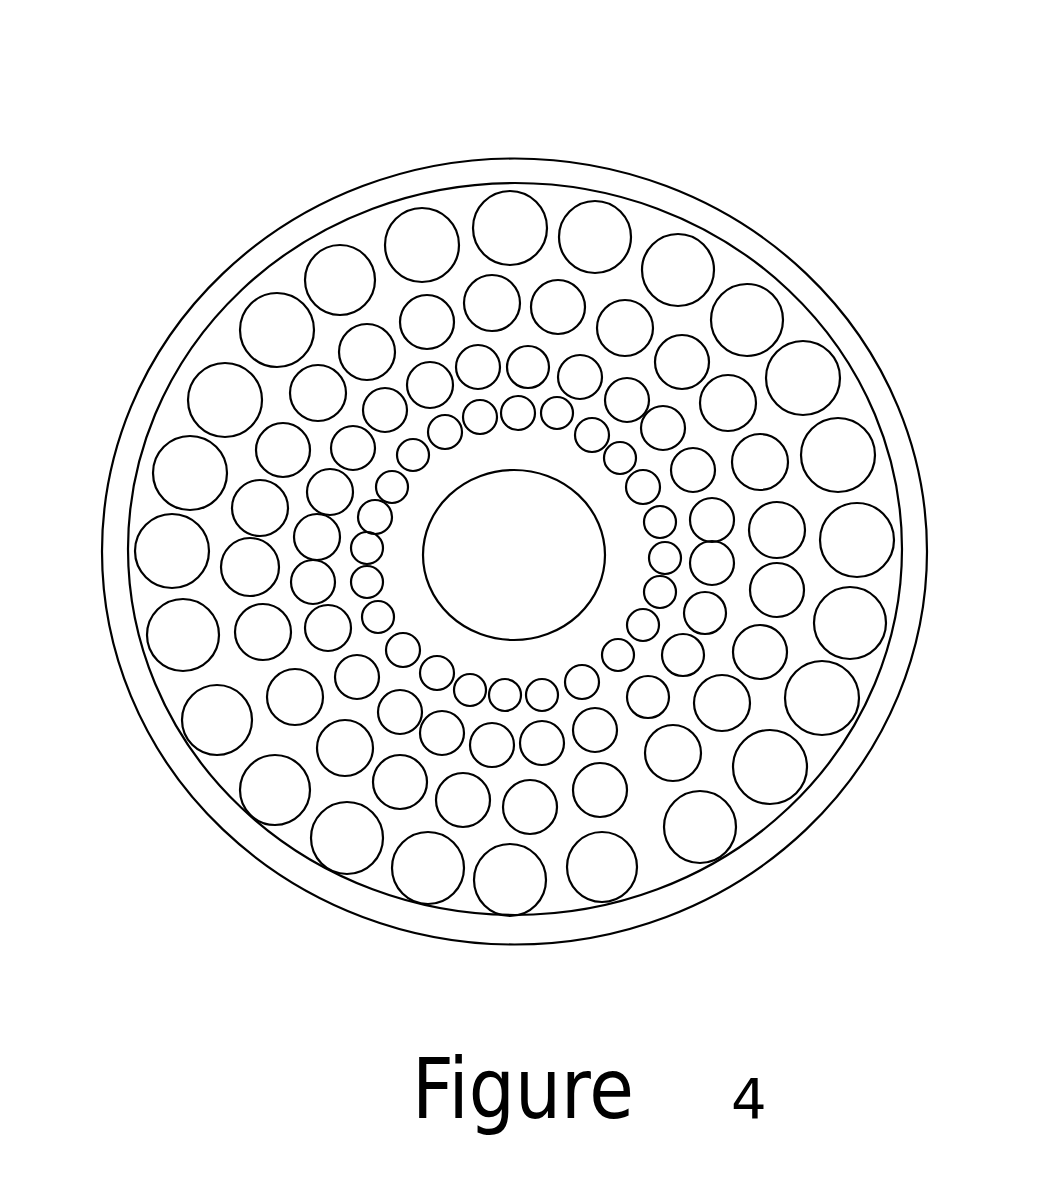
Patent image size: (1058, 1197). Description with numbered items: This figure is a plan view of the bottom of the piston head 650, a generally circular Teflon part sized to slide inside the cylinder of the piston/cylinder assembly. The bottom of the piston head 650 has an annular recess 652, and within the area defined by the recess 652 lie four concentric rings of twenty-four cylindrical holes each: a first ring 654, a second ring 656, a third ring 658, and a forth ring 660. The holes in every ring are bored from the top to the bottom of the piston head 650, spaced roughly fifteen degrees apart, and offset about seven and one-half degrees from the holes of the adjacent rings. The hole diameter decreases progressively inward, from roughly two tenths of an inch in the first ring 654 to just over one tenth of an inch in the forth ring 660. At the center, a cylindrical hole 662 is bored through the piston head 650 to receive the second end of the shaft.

The piston head 650 is at (708, 155).
The annular recess 652 is at (303, 825).
The first ring 654 is at (160, 690).
The second ring 656 is at (356, 795).
The third ring 658 is at (568, 782).
The forth ring 660 is at (660, 667).
The cylindrical hole 662 is at (516, 478).